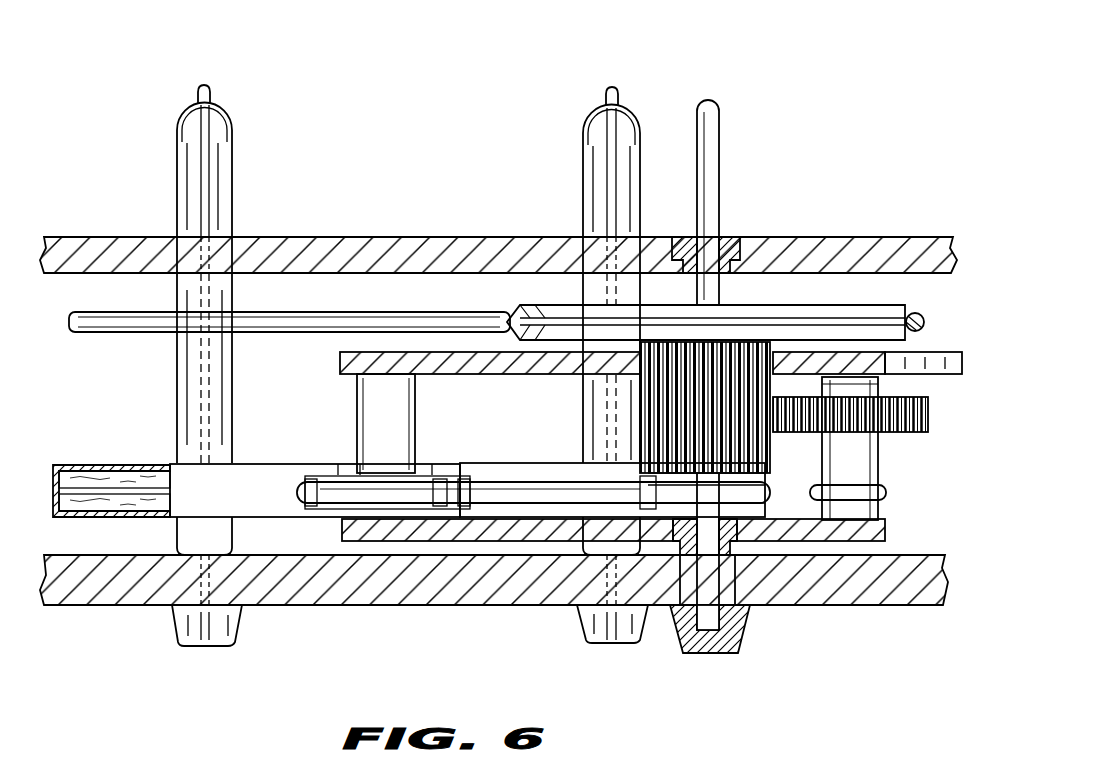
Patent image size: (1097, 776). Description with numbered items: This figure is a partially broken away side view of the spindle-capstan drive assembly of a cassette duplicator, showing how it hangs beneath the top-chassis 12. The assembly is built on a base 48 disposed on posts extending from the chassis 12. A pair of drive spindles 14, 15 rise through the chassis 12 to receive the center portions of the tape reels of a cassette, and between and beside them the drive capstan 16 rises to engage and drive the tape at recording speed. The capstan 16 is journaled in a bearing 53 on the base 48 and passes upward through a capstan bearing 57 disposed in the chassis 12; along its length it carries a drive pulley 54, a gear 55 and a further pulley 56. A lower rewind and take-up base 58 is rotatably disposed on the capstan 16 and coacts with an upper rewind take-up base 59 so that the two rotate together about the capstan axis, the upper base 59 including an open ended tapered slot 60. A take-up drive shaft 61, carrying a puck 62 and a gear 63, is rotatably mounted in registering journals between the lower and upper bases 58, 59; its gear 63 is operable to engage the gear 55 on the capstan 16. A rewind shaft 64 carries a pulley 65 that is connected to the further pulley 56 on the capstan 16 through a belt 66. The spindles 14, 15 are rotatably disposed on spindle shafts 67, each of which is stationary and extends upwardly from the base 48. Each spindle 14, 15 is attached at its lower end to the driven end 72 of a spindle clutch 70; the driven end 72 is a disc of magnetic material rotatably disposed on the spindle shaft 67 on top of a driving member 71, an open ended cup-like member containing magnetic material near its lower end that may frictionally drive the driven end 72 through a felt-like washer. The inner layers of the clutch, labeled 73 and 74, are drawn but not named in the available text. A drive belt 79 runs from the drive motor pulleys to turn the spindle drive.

The top-chassis 12 is at (365, 237).
The drive spindle 14 is at (232, 141).
The drive spindle 15 is at (586, 129).
The drive capstan 16 is at (719, 151).
The base 48 is at (862, 605).
The bearing 53 is at (752, 605).
The drive pulley 54 is at (516, 306).
The gear 55 is at (745, 360).
The further pulley 56 is at (680, 514).
The capstan bearing 57 is at (722, 237).
The lower rewind and take-up base 58 is at (886, 531).
The upper rewind take-up base 59 is at (340, 366).
The open ended tapered slot 60 is at (926, 351).
The take-up drive shaft 61 is at (858, 458).
The puck 62 is at (888, 493).
The gear 63 is at (905, 432).
The rewind shaft 64 is at (400, 412).
The pulley 65 is at (428, 476).
The belt 66 is at (540, 492).
The spindle shaft 67 is at (210, 87).
The spindle clutch 70 is at (477, 523).
The driving member 71 is at (125, 518).
The driven end 72 is at (131, 468).
The layer 73 is at (90, 486).
The layer 74 is at (96, 517).
The drive belt 79 is at (281, 312).